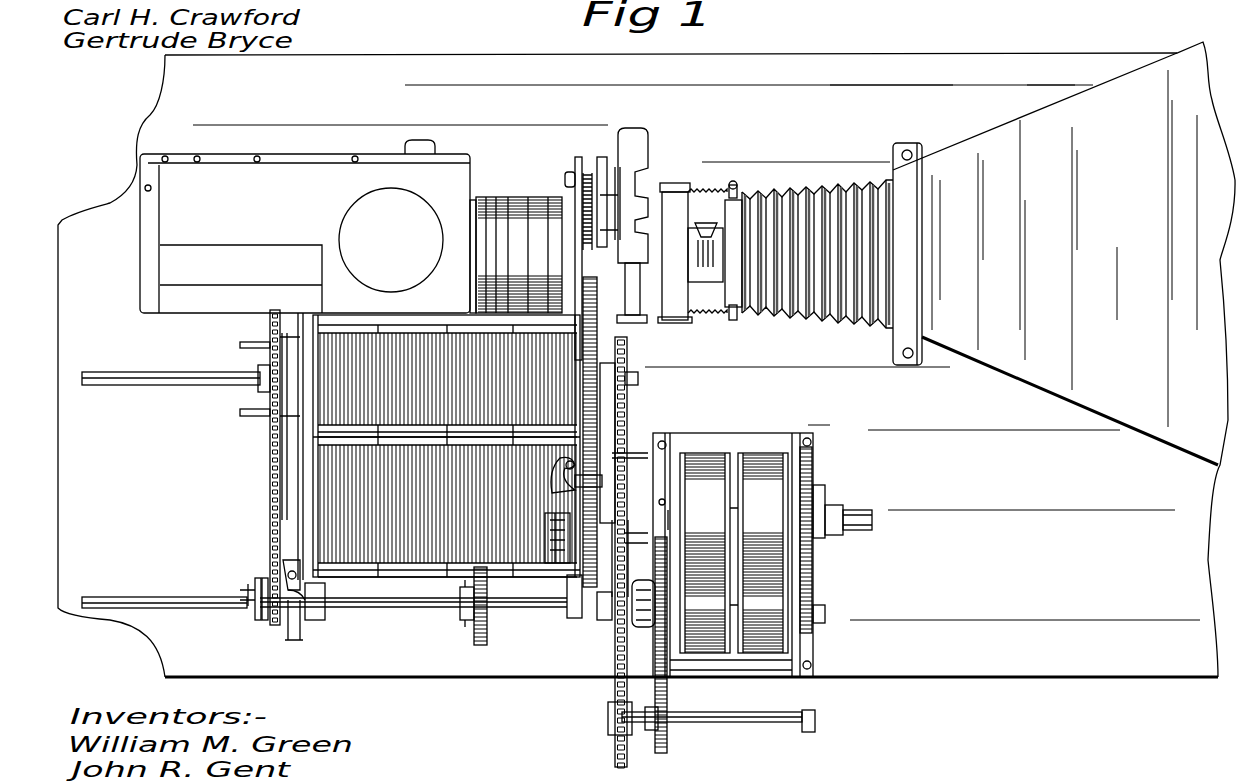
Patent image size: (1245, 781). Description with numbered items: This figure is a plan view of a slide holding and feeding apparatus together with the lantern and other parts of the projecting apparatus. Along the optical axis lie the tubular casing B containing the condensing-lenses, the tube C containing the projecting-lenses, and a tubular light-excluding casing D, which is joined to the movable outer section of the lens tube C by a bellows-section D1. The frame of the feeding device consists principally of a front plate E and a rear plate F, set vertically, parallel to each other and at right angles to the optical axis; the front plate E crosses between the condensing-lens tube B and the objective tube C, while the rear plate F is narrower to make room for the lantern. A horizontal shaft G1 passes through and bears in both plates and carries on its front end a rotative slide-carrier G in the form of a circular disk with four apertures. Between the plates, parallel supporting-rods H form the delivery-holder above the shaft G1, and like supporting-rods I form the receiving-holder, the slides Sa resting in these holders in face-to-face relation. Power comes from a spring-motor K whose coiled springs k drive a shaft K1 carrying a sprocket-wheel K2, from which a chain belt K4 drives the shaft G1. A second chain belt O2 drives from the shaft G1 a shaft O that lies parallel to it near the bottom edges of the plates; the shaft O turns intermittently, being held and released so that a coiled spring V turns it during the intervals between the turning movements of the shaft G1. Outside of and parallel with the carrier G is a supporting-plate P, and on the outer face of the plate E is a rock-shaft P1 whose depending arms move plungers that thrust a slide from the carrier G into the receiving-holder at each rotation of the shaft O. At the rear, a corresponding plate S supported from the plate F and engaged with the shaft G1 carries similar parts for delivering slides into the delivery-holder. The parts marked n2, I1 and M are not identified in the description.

The supporting-rods H is at (467, 430).
The tubular casing B is at (516, 255).
The front plate E is at (576, 162).
The lever n2 is at (632, 192).
The tube containing the projecting-lenses C is at (716, 225).
The bellows-section D1 is at (795, 188).
The light-excluding casing D is at (1055, 259).
The horizontal shaft G1 is at (218, 386).
The plate S is at (270, 355).
The chain belt O2 is at (268, 475).
The slides Sa is at (425, 578).
The supporting-rods I is at (445, 440).
The roller bar I1 is at (385, 565).
The bracket M is at (540, 568).
The shaft O is at (427, 600).
The rear plate F is at (330, 605).
The spring V is at (285, 615).
The slide-carrier G is at (597, 333).
The supporting-plate P is at (608, 413).
The rock-shaft P1 is at (615, 507).
The spring-motor K is at (733, 575).
The coiled springs k is at (675, 510).
The shaft K1 is at (837, 515).
The chain belt K4 is at (615, 648).
The sprocket-wheel K2 is at (608, 718).